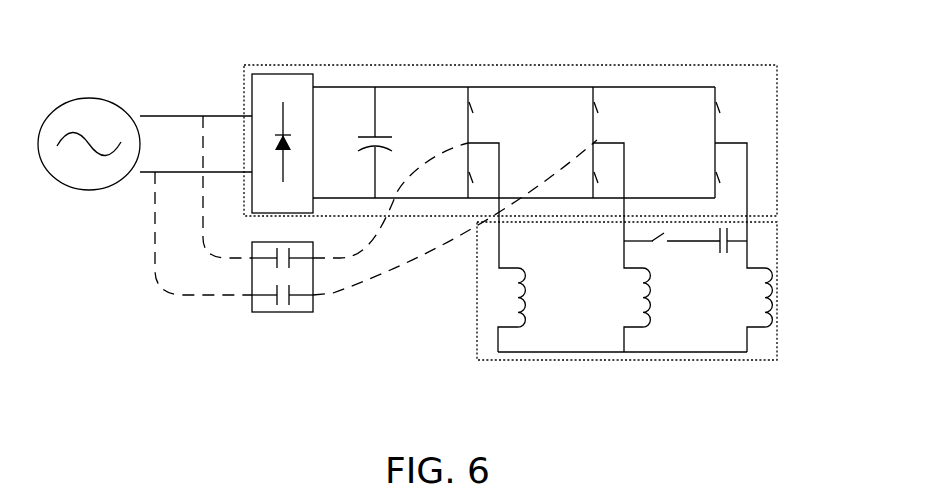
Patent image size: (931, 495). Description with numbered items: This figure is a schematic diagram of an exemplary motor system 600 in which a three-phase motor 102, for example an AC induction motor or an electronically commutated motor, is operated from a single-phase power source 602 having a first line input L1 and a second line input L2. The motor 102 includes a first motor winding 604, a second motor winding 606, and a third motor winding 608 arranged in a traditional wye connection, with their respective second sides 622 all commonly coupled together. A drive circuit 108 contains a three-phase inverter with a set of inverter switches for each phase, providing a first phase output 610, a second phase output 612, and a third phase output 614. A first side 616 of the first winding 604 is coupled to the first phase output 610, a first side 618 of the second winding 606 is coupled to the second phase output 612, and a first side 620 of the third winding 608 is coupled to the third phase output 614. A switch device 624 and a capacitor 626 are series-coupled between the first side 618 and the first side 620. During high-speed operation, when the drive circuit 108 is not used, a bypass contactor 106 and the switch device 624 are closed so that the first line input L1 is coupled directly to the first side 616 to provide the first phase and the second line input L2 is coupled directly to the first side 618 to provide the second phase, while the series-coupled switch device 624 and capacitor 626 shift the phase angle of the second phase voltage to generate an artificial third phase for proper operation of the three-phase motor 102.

The motor system 600 is at (637, 34).
The power source 602 is at (80, 98).
The first line input L1 is at (143, 116).
The second line input L2 is at (143, 172).
The bypass contactor 106 is at (297, 313).
The drive circuit 108 is at (510, 129).
The first phase output 610 is at (472, 141).
The second phase output 612 is at (597, 141).
The third phase output 614 is at (719, 141).
The first side of first winding 616 is at (486, 265).
The first side of second winding 618 is at (612, 265).
The first side of third winding 620 is at (767, 264).
The first motor winding 604 is at (521, 326).
The second motor winding 606 is at (646, 326).
The third motor winding 608 is at (768, 326).
The second sides of motor windings 622 is at (603, 359).
The switch device 624 is at (660, 243).
The capacitor 626 is at (732, 237).
The motor 102 is at (625, 265).